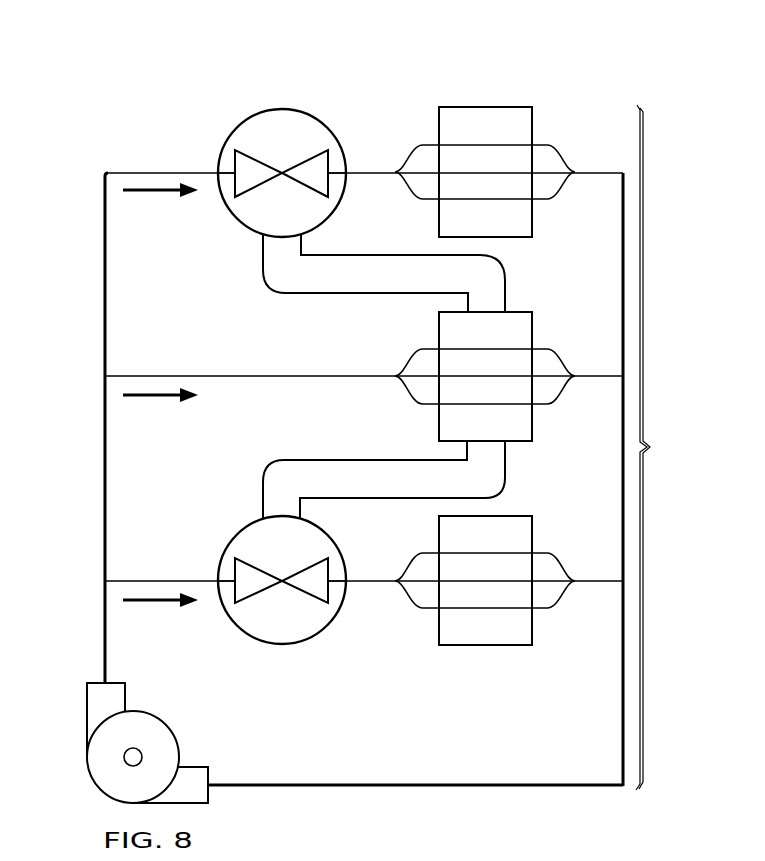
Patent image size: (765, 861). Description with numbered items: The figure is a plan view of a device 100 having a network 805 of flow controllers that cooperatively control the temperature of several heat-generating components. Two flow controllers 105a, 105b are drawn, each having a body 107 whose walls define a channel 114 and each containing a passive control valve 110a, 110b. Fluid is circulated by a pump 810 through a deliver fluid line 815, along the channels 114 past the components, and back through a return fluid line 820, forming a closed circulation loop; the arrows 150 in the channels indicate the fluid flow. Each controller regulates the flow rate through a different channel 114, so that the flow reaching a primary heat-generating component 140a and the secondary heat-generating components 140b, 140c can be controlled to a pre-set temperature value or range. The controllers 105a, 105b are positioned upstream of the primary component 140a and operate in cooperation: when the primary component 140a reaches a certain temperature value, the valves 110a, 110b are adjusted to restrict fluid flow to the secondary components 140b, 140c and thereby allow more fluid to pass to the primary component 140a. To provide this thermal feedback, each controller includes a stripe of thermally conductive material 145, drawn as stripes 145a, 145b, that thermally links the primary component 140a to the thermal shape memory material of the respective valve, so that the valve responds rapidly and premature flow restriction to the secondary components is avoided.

The device 100 is at (175, 58).
The flow controller 105a is at (281, 143).
The flow controller 105b is at (281, 610).
The body 107 is at (298, 224).
The valve 110a is at (282, 171).
The valve 110b is at (282, 584).
The channel 114 is at (595, 290).
The primary heat-generating component 140a is at (532, 413).
The secondary heat-generating component 140b is at (485, 107).
The secondary heat-generating component 140c is at (486, 645).
The bypass conduits 145 is at (384, 368).
The stripe of thermally conductive material 145a is at (380, 294).
The stripe of thermally conductive material 145b is at (380, 499).
The flow direction 150 is at (160, 198).
The network of flow controllers 805 is at (655, 447).
The pump 810 is at (87, 765).
The deliver fluid line 815 is at (104, 428).
The return fluid line 820 is at (413, 788).